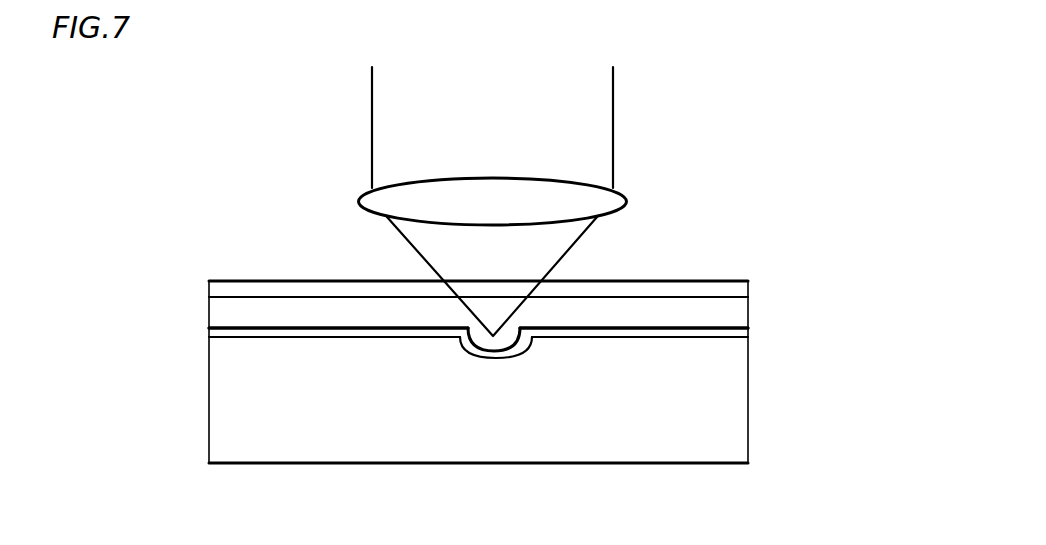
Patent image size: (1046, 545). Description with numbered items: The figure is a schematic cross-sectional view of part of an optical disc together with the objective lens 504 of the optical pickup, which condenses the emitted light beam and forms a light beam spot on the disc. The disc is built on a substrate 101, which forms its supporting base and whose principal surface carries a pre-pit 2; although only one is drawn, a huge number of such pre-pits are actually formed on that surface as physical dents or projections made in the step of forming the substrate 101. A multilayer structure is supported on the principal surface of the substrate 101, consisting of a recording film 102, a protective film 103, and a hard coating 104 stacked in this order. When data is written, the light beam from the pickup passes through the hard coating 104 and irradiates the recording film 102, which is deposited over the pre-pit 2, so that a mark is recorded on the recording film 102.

The substrate 101 is at (388, 465).
The recording film 102 is at (223, 330).
The protective film 103 is at (730, 312).
The hard coating 104 is at (227, 288).
The pre-pit 2 is at (491, 360).
The objective lens 504 is at (627, 202).